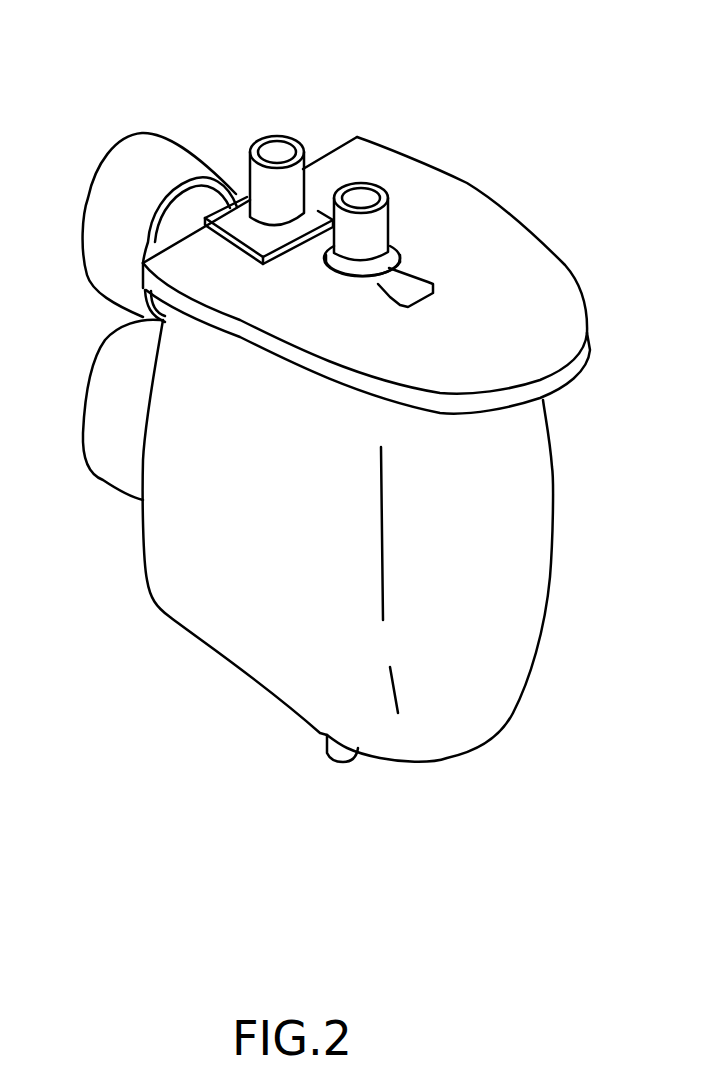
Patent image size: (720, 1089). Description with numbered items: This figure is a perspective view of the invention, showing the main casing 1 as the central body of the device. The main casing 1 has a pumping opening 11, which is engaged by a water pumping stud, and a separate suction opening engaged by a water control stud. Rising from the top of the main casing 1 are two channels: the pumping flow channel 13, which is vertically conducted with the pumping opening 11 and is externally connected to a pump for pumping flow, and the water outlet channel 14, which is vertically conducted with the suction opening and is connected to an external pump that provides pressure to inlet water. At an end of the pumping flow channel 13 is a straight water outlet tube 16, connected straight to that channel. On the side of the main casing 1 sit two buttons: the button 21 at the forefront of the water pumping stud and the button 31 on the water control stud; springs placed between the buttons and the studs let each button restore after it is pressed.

The main casing 1 is at (518, 563).
The pumping opening 11 is at (190, 213).
The pumping flow channel 13 is at (363, 197).
The water outlet channel 14 is at (277, 150).
The straight water outlet tube 16 is at (338, 753).
The button 21 is at (128, 202).
The button 31 is at (113, 430).